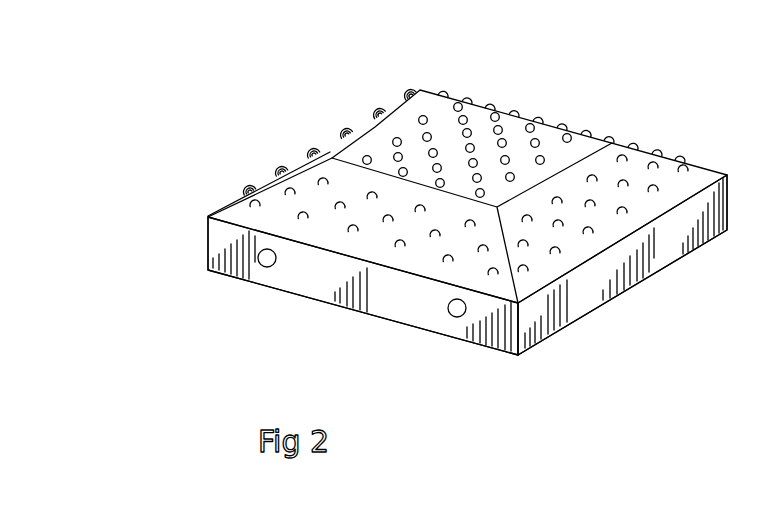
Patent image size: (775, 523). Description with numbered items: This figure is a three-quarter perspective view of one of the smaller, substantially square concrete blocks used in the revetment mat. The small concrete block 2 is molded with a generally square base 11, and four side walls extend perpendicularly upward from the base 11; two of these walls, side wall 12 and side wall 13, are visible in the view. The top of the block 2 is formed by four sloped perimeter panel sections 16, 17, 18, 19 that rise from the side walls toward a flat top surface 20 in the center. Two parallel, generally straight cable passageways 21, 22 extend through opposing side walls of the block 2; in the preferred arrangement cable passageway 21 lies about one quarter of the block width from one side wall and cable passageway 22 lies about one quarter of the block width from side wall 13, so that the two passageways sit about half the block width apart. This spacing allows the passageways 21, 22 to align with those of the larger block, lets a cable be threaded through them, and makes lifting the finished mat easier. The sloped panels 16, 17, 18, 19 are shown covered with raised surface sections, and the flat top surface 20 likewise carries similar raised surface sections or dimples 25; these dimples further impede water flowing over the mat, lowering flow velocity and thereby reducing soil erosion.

The small concrete block 2 is at (568, 85).
The base 11 is at (619, 275).
The side wall 12 is at (547, 315).
The side wall 13 is at (347, 297).
The sloped perimeter panel section 16 is at (655, 162).
The sloped perimeter panel section 17 is at (480, 283).
The sloped perimeter panel section 18 is at (365, 127).
The sloped perimeter panel section 19 is at (578, 130).
The flat top surface 20 is at (475, 112).
The cable passageway 21 is at (457, 315).
The cable passageway 22 is at (267, 258).
The raised surface sections or dimples 25 is at (498, 130).